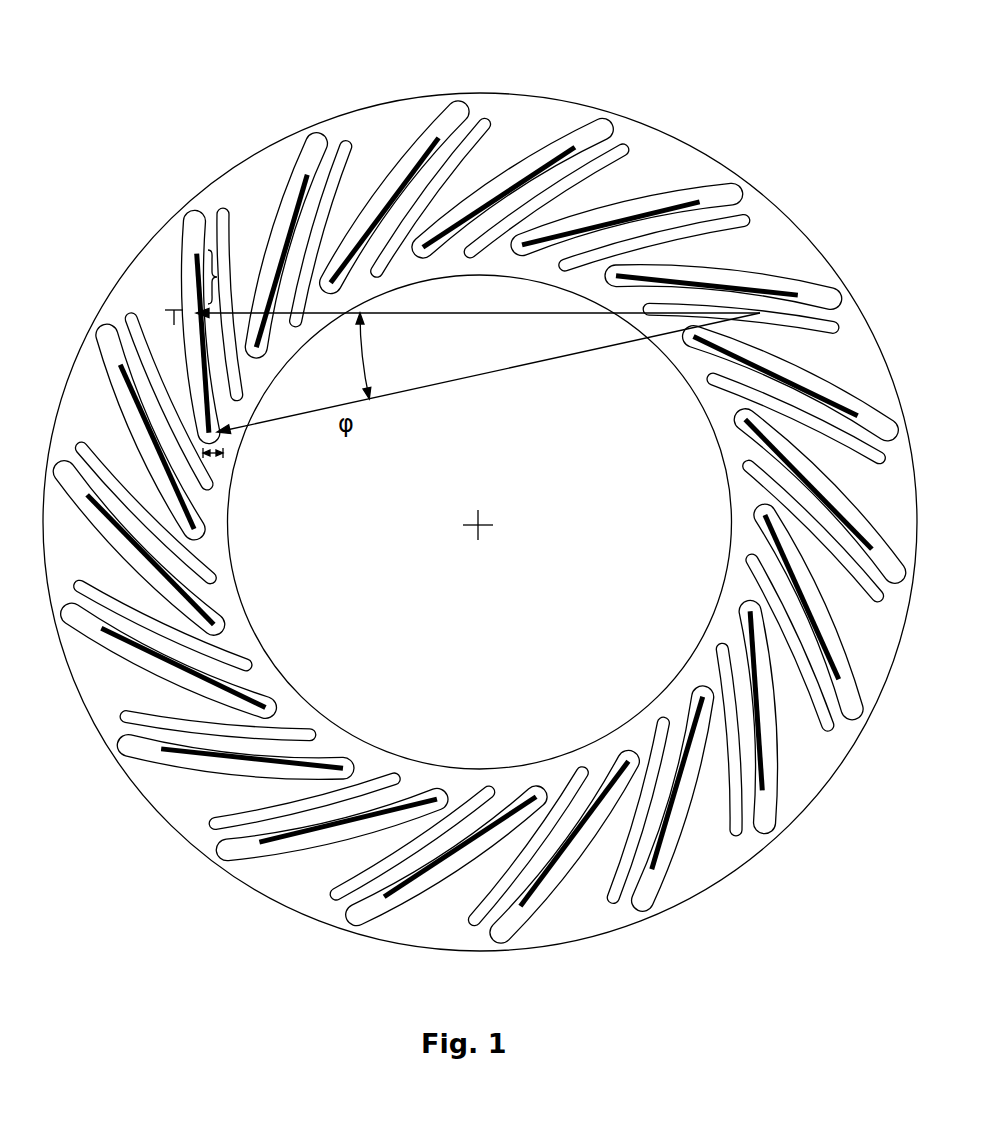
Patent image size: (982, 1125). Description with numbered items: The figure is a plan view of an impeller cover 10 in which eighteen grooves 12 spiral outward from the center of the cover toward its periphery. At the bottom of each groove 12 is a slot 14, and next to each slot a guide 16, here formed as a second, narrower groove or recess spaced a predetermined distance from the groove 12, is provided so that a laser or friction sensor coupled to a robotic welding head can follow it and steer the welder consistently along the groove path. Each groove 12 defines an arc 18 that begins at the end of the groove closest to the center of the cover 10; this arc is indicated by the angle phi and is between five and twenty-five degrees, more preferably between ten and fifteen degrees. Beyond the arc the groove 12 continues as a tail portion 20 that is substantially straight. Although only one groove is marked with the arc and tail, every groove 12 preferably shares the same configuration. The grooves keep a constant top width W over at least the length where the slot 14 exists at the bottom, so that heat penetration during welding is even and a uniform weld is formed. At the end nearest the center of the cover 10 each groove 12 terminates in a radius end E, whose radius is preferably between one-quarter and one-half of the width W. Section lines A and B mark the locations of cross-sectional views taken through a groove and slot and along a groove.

The impeller cover 10 is at (768, 136).
The groove 12 is at (183, 280).
The slot 14 is at (195, 262).
The guide 16 is at (218, 215).
The arc 18 is at (460, 334).
The tail portion 20 is at (217, 278).
The radius end E is at (220, 435).
The top width W is at (214, 457).
The section line A- A is at (677, 170).
The section line B- B is at (490, 250).